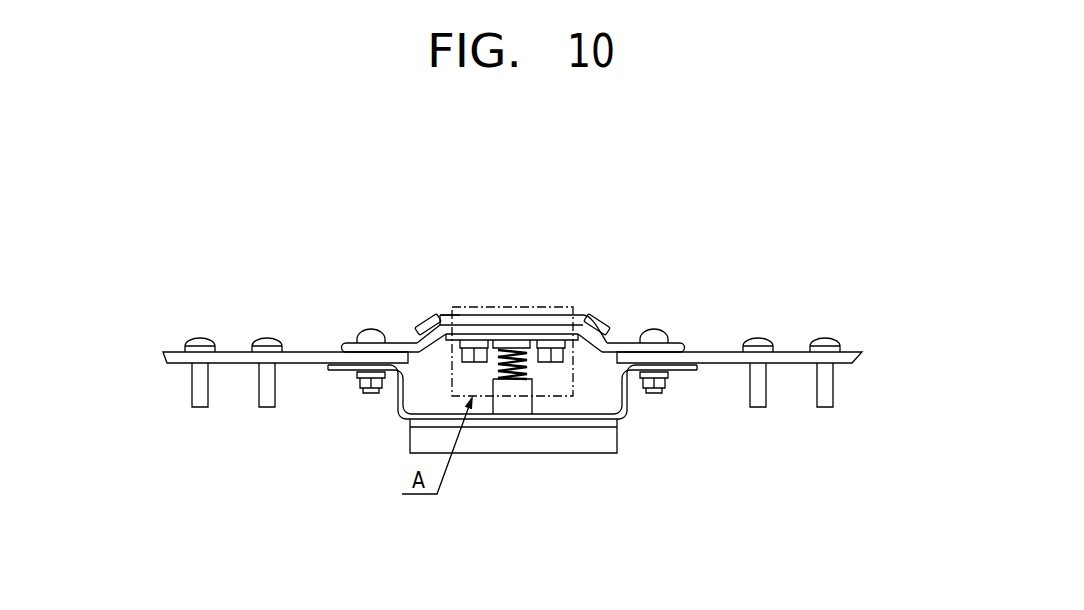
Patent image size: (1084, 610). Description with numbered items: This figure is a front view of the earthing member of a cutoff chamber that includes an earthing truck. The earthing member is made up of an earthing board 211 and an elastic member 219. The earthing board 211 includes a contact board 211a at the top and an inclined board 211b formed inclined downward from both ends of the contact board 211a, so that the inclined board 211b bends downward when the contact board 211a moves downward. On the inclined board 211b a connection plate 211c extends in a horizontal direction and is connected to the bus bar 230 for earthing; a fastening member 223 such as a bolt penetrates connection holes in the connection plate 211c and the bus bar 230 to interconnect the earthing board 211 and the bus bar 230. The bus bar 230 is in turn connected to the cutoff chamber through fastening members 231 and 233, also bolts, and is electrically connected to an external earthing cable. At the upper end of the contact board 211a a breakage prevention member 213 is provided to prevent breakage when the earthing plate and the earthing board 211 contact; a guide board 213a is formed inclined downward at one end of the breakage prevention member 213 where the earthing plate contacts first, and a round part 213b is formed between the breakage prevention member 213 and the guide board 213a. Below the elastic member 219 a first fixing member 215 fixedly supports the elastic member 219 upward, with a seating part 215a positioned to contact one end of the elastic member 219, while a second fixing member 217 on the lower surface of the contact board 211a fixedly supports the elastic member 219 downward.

The earthing board 211 is at (513, 271).
The contact board 211a is at (555, 330).
The inclined board 211b is at (580, 318).
The connection plate 211c is at (545, 227).
The breakage prevention member 213 is at (530, 320).
The guide board 213a is at (422, 325).
The round part 213b is at (440, 313).
The first fixing member 215 is at (588, 447).
The seating part 215a is at (520, 408).
The second fixing member 217 is at (505, 348).
The elastic member 219 is at (511, 373).
The fastening member 223 is at (371, 331).
The bus bar 230 is at (163, 355).
The fastening member 231 is at (267, 339).
The fastening member 233 is at (201, 339).